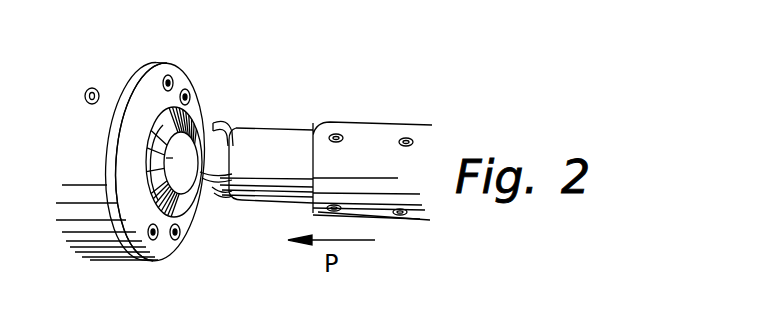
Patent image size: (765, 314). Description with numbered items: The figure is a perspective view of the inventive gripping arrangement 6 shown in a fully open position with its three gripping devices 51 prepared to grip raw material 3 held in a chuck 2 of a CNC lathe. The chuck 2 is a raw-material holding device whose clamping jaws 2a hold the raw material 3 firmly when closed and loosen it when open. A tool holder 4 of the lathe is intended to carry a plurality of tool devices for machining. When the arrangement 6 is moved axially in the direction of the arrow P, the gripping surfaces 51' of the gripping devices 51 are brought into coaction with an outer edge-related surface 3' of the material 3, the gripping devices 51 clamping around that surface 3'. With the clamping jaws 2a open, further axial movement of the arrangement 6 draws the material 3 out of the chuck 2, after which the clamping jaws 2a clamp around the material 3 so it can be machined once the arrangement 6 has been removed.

The chuck 2 is at (170, 63).
The clamping jaws 2a is at (188, 98).
The raw material 3 is at (107, 249).
The outer edge-related surface 3' is at (203, 198).
The tool holder 4 is at (463, 135).
The gripping devices 51 is at (257, 115).
The gripping surfaces 51' is at (226, 102).
The arrangement 6 is at (297, 128).